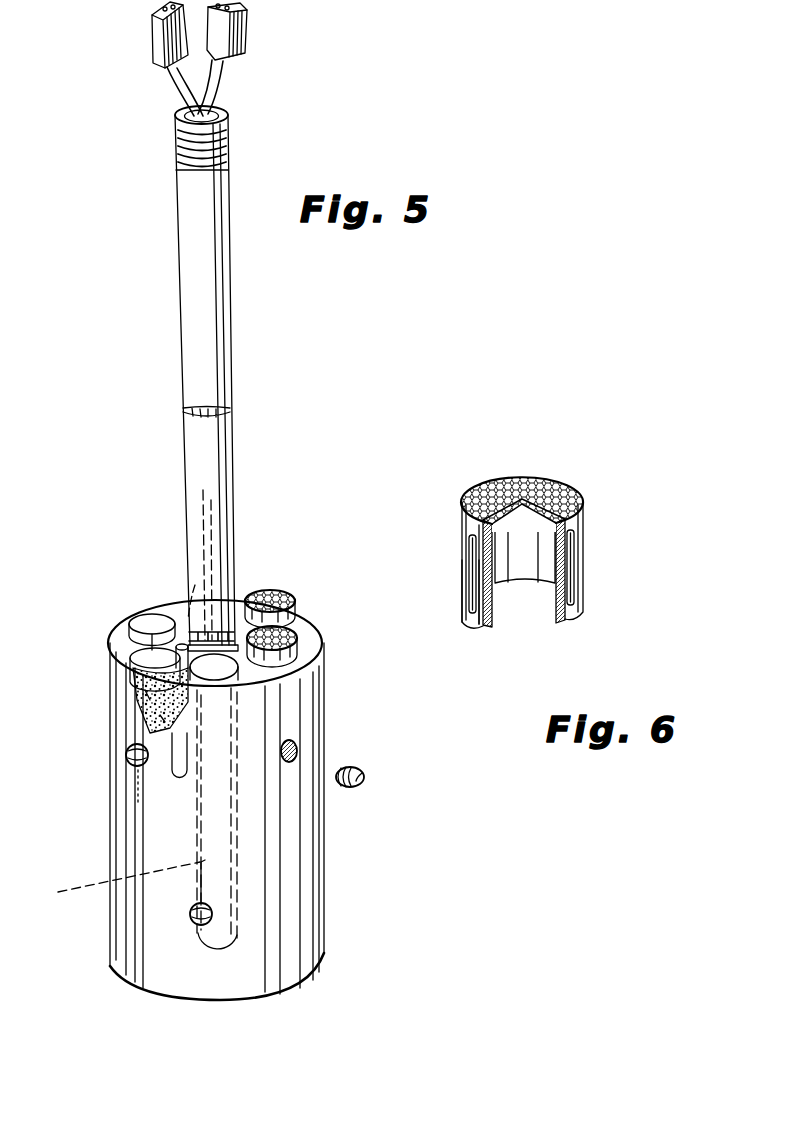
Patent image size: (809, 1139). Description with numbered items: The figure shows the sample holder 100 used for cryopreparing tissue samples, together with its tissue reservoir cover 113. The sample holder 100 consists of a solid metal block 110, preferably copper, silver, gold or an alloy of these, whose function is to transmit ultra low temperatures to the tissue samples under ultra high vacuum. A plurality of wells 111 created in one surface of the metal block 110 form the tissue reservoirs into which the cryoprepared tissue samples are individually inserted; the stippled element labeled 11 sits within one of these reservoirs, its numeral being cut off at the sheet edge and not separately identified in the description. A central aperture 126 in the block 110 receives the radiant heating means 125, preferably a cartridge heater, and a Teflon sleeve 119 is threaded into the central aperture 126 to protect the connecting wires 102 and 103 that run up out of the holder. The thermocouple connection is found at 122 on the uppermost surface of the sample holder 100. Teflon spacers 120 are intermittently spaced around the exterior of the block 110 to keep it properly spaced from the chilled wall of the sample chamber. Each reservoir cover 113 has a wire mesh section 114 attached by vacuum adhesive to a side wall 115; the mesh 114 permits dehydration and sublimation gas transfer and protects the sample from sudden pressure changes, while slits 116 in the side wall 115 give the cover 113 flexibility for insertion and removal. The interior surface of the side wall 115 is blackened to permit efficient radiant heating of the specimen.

In FIG. 5, the connecting wire 102 is at (152, 38).
In FIG. 5, the connecting wire 103 is at (250, 42).
In FIG. 5, the Teflon sleeve 119 is at (238, 462).
In FIG. 5, the well 111 is at (132, 617).
In FIG. 5, the thermocouple connection 122 is at (176, 645).
In FIG. 5, the filter block 11 is at (140, 672).
In FIG. 5, the Teflon spacer 120 is at (138, 758).
In FIG. 5, the solid metal block 110 is at (136, 830).
In FIG. 5, the central aperture 126 is at (108, 887).
In FIG. 5, the radiant heating means 125 is at (227, 938).
In FIG. 5, the sample holder 100 is at (290, 883).
In FIG. 6, the wire mesh section 114 is at (562, 482).
In FIG. 6, the side wall 115 is at (577, 552).
In FIG. 6, the reservoir cover 113 is at (583, 592).
In FIG. 6, the slit 116 is at (472, 588).